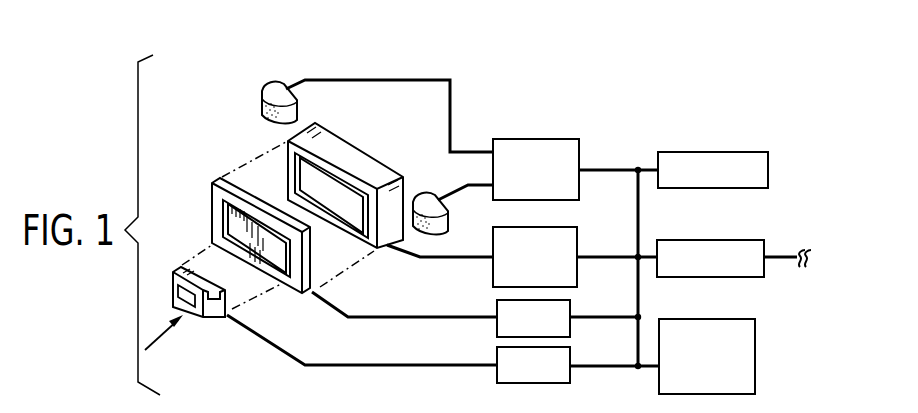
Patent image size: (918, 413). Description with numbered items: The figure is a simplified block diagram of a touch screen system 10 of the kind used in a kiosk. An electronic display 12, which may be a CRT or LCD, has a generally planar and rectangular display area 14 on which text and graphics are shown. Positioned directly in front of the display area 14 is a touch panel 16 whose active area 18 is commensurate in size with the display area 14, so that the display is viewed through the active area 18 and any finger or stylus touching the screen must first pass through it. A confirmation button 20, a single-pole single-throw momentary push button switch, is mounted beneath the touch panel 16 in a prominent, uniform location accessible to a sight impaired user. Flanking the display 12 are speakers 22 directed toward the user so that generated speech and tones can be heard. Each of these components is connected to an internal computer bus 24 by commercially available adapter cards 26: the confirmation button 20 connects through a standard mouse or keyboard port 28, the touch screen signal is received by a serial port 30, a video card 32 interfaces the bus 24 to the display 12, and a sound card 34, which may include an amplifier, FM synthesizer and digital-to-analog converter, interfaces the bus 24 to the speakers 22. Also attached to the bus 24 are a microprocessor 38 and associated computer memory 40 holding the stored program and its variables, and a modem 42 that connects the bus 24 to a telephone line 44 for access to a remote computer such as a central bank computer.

The touch screen system 10 is at (501, 59).
The electronic display 12 is at (312, 173).
The display area 14 is at (307, 174).
The touch panel 16 is at (279, 218).
The active area 18 is at (284, 254).
The confirmation button 20 is at (210, 318).
The speakers 22 is at (275, 92).
The internal computer bus 24 is at (638, 168).
The adapter cards 26 is at (578, 108).
The mouse or keyboard port 28 is at (572, 355).
The serial port 30 is at (572, 308).
The video card 32 is at (562, 227).
The sound card 34 is at (520, 139).
The microprocessor 38 is at (757, 360).
The computer memory 40 is at (740, 152).
The modem 42 is at (730, 240).
The telephone line 44 is at (777, 260).